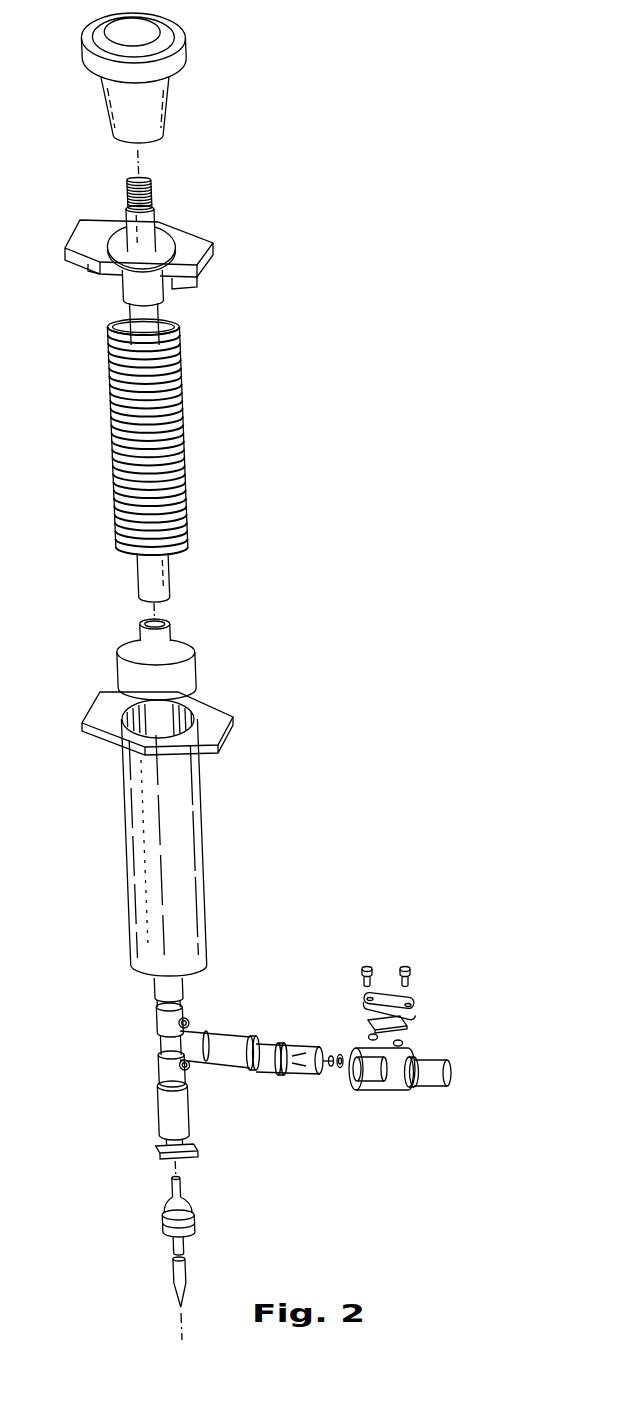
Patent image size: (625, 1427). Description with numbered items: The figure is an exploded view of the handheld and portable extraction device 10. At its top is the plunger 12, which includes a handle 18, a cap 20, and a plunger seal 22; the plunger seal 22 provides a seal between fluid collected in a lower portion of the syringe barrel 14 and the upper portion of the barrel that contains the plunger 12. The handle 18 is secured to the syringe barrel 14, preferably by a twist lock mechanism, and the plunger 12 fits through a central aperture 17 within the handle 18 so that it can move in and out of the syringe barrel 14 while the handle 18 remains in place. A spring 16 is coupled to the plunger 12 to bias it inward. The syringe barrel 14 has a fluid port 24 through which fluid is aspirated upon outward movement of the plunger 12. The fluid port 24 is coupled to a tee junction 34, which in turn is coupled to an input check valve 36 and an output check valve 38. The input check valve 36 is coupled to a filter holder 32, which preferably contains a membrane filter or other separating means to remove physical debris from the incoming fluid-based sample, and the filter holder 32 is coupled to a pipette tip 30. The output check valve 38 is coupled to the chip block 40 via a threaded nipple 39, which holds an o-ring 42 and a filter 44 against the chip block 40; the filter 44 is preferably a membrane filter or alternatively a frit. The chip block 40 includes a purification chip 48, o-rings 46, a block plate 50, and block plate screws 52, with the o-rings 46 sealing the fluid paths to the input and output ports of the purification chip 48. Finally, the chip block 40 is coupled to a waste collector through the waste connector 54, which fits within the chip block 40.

The extraction device 10 is at (400, 47).
The plunger 12 is at (148, 321).
The syringe barrel 14 is at (203, 882).
The spring 16 is at (117, 404).
The central aperture 17 is at (168, 245).
The handle 18 is at (213, 268).
The cap 20 is at (176, 104).
The plunger seal 22 is at (162, 678).
The fluid port 24 is at (170, 988).
The pipette tip 30 is at (187, 1272).
The filter holder 32 is at (188, 1228).
The tee junction 34 is at (158, 1052).
The input check valve 36 is at (178, 1110).
The output check valve 38 is at (230, 1046).
The threaded nipple 39 is at (278, 1076).
The chip block 40 is at (393, 1092).
The o-ring 42 is at (331, 1068).
The filter 44 is at (330, 1056).
The o-rings 46 is at (370, 1035).
The purification chip 48 is at (406, 1025).
The block plate 50 is at (420, 1000).
The block plate screws 52 is at (405, 966).
The waste connector 54 is at (433, 1088).